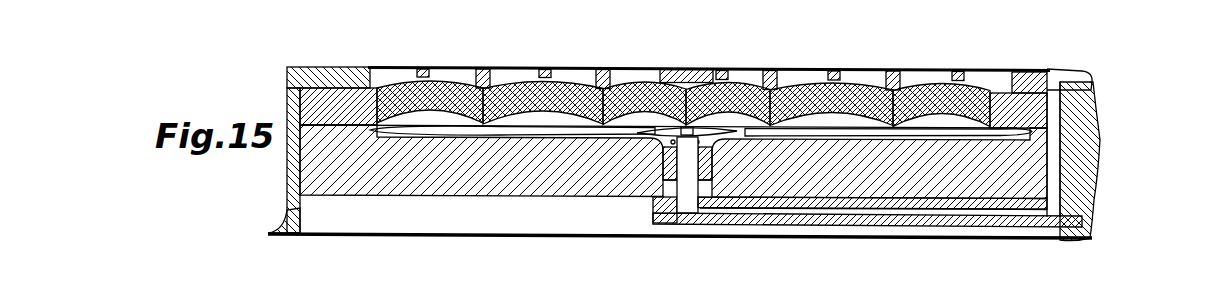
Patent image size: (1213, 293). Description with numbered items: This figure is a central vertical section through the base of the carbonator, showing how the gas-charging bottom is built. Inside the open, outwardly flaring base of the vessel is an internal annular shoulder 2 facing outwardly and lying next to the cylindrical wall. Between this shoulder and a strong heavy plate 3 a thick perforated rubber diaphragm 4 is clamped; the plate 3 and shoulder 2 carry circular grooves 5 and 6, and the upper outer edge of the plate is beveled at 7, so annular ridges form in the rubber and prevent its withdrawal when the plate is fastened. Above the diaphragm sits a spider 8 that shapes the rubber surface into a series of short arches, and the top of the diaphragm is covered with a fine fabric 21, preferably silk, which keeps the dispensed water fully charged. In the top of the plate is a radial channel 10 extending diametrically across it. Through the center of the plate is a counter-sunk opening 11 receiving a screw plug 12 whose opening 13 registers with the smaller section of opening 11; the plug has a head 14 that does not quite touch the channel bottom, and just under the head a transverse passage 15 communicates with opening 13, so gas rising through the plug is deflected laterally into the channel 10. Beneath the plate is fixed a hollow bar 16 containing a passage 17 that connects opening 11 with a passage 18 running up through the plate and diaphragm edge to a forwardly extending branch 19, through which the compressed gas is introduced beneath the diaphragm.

The internal annular shoulder 2 is at (290, 233).
The plate 3 is at (363, 172).
The perforated rubber diaphragm 4 is at (572, 72).
The circular groove 5 is at (287, 172).
The circular groove 6 is at (300, 89).
The beveled edge 7 is at (287, 137).
The spider 8 is at (433, 112).
The radial channel 10 is at (548, 132).
The central opening 11 is at (676, 143).
The screw plug 12 is at (650, 172).
The plug opening 13 is at (686, 141).
The plug head 14 is at (722, 74).
The transverse passage 15 is at (701, 133).
The hollow bar 16 is at (872, 220).
The passage 17 is at (790, 205).
The passage 18 is at (1080, 130).
The forwardly extending branch 19 is at (1053, 77).
The fine fabric 21 is at (922, 88).